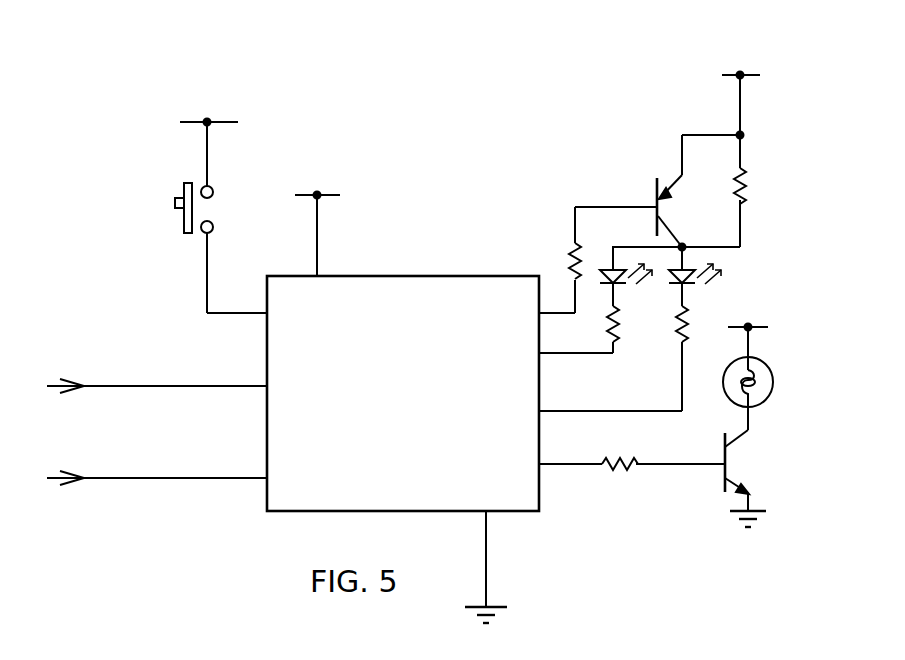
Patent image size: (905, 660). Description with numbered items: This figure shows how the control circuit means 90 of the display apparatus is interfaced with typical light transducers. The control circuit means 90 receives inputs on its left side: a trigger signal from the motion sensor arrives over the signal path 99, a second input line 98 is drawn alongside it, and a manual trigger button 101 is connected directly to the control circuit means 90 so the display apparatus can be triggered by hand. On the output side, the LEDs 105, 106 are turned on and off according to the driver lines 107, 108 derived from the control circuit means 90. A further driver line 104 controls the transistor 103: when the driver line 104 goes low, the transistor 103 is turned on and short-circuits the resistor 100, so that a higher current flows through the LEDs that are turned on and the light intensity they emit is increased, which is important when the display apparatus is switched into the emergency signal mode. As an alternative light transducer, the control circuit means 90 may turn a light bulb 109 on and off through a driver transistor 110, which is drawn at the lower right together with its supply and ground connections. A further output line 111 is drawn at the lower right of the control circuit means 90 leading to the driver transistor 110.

The control circuit means 90 is at (420, 285).
The input signal line 98 is at (192, 478).
The signal path 99 is at (162, 386).
The resistor 100 is at (750, 195).
The manual trigger button 101 is at (184, 223).
The transistor 103 is at (672, 190).
The driver line 104 is at (556, 312).
The LED 105 is at (588, 265).
The LED 106 is at (692, 287).
The driver line 107 is at (577, 355).
The driver line 108 is at (653, 411).
The light bulb 109 is at (773, 382).
The driver transistor 110 is at (738, 440).
The control line 111 is at (552, 466).